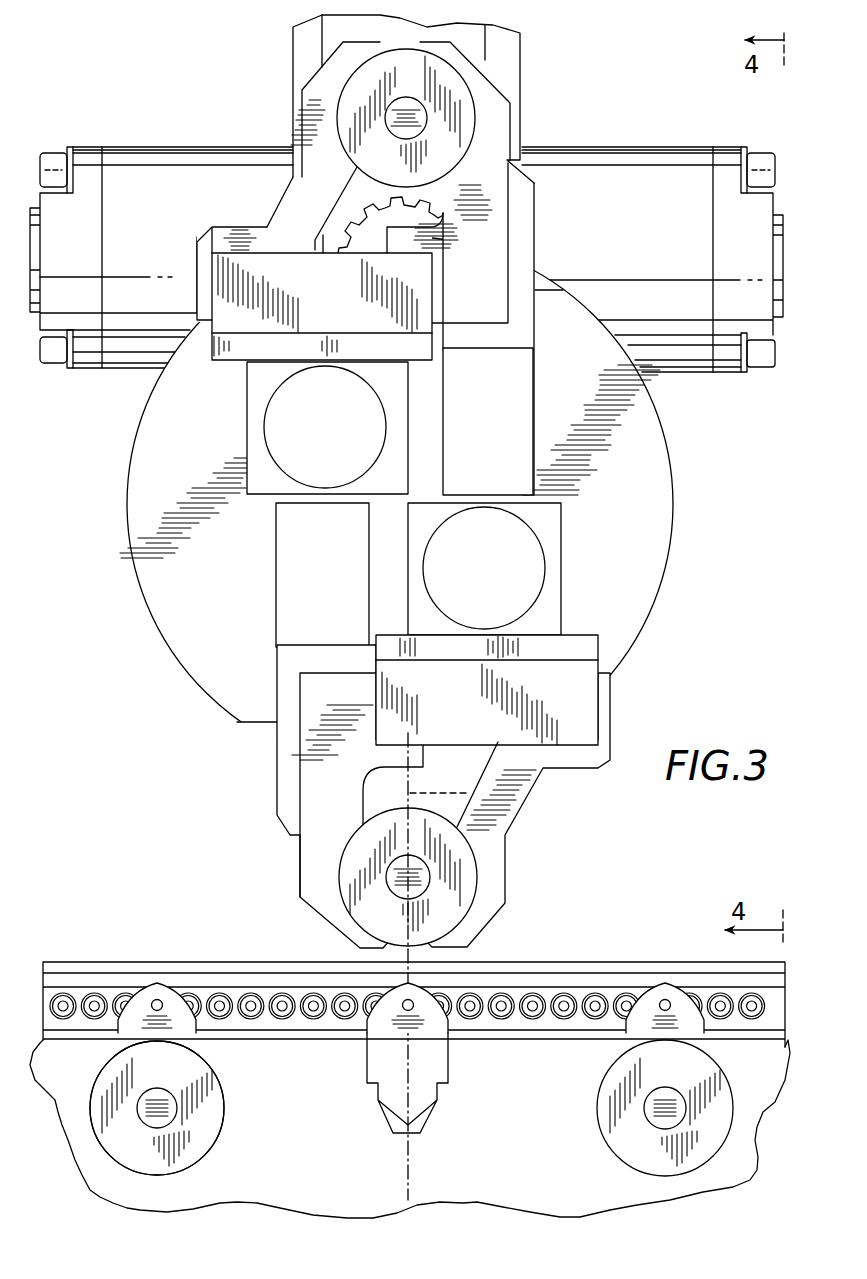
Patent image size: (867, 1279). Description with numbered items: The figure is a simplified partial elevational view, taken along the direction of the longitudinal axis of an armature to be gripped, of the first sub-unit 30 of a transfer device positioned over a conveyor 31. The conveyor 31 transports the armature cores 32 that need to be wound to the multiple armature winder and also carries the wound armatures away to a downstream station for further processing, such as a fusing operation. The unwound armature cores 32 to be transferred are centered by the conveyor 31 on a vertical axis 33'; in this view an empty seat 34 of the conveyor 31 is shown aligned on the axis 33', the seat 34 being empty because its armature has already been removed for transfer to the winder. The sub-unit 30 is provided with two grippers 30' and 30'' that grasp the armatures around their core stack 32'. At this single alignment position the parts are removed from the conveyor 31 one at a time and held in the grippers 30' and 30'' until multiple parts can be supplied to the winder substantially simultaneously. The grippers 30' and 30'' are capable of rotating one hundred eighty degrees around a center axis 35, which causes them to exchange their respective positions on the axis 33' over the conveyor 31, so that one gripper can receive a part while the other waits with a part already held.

The sub-unit 30 is at (445, 504).
The gripper 30' is at (375, 917).
The gripper 30'' is at (446, 171).
The center axis 35 is at (413, 490).
The vertical axis 33' is at (500, 786).
The conveyor 31 is at (617, 953).
The armature core 32 is at (411, 1079).
The core stack 32' is at (192, 1108).
The seat 34 is at (437, 1105).